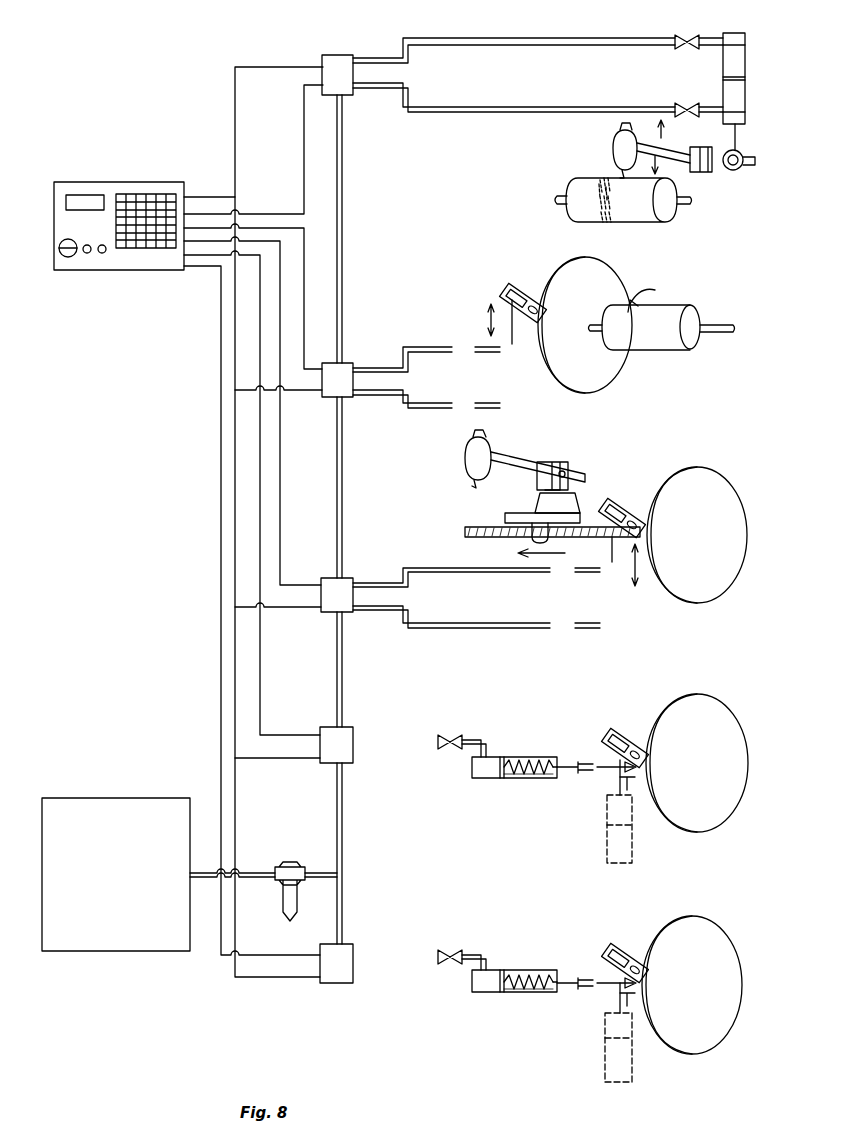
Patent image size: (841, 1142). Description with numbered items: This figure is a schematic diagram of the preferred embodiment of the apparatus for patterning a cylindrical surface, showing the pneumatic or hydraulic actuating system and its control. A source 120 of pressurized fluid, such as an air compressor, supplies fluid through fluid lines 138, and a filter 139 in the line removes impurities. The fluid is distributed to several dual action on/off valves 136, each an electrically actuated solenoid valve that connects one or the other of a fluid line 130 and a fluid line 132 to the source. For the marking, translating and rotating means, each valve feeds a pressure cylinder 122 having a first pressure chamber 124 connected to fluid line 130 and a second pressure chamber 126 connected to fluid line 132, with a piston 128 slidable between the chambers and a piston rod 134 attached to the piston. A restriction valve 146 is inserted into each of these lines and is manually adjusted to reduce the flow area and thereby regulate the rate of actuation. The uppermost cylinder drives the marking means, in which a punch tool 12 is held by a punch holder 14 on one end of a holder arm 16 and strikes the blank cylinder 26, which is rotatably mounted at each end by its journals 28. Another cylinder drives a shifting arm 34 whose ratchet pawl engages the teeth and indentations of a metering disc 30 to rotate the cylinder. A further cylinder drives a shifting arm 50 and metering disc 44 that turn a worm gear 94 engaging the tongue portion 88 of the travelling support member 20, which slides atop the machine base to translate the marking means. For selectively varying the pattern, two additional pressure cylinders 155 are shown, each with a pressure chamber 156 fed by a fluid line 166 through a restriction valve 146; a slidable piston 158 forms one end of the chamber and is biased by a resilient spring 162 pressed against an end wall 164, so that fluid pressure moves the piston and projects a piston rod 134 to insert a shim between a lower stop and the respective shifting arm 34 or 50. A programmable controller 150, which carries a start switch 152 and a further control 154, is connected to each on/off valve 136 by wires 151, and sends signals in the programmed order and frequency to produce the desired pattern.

The punch tool 12 is at (477, 486).
The punch holder 14 is at (490, 445).
The holder arm 16 is at (508, 456).
The travelling support member 20 is at (578, 513).
The blank cylinder 26 is at (578, 212).
The roller shaft 28 is at (562, 196).
The metering disc 30 is at (605, 265).
The shifting arm 34 is at (515, 292).
The metering disc 44 is at (720, 492).
The shifting arm 50 is at (615, 503).
The tongue portion 88 is at (533, 540).
The worm gear 94 is at (470, 527).
The source of pressurized fluid 120 is at (127, 798).
The pressure cylinder 122 is at (745, 94).
The first pressure chamber 124 is at (745, 40).
The second pressure chamber 126 is at (745, 112).
The piston 128 is at (742, 72).
The fluid line 130 is at (705, 38).
The fluid line 132 is at (717, 84).
The piston rod 134 is at (738, 150).
The dual action on/off valve 136 is at (336, 55).
The fluid lines 138 is at (342, 190).
The filter 139 is at (290, 867).
The restriction valve 146 is at (684, 35).
The programmable controller 150 is at (150, 182).
The wires 151 is at (252, 67).
The start switch 152 is at (87, 253).
The switch 154 is at (102, 253).
The pressure cylinder 155 is at (540, 778).
The pressure chamber 156 is at (490, 757).
The slidable piston 158 is at (498, 778).
The resilient spring 162 is at (528, 757).
The end wall 164 is at (562, 778).
The fluid line 166 is at (484, 740).